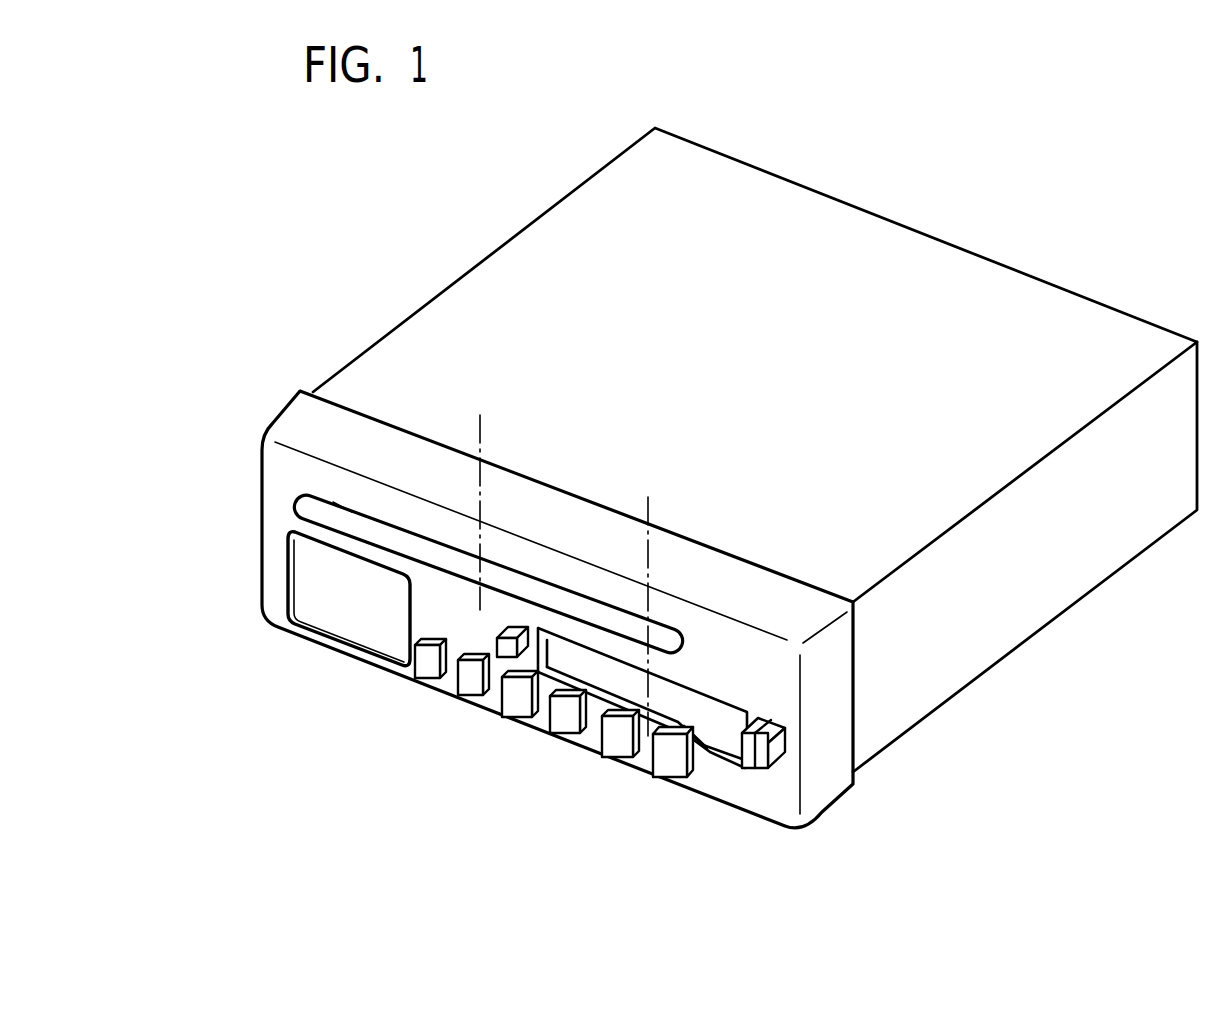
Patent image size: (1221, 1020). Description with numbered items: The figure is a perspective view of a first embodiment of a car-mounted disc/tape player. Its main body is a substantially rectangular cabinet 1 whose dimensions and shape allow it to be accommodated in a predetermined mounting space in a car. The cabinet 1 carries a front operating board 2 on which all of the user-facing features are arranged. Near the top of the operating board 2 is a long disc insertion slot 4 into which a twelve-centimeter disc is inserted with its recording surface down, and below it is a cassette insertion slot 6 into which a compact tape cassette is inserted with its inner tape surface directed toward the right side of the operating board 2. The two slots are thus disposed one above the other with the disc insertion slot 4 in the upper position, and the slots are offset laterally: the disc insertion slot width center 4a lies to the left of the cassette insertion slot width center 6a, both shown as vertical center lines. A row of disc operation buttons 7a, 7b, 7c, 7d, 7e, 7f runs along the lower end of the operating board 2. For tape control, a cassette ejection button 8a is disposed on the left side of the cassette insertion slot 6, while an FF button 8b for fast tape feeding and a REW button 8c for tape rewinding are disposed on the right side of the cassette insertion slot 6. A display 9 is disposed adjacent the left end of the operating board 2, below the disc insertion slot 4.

The cabinet 1 is at (1018, 628).
The front operating board 2 is at (827, 780).
The disc insertion slot 4 is at (308, 488).
The disc insertion slot width center 4a is at (482, 442).
The cassette insertion slot 6 is at (722, 738).
The cassette insertion slot width center 6a is at (648, 519).
The disc operation button 7a is at (425, 665).
The disc operation button 7b is at (468, 680).
The disc operation button 7c is at (520, 703).
The disc operation button 7d is at (565, 722).
The disc operation button 7e is at (617, 740).
The disc operation button 7f is at (667, 765).
The cassette ejection button 8a is at (500, 652).
The FF button 8b is at (760, 768).
The REW button 8c is at (743, 760).
The display 9 is at (320, 610).